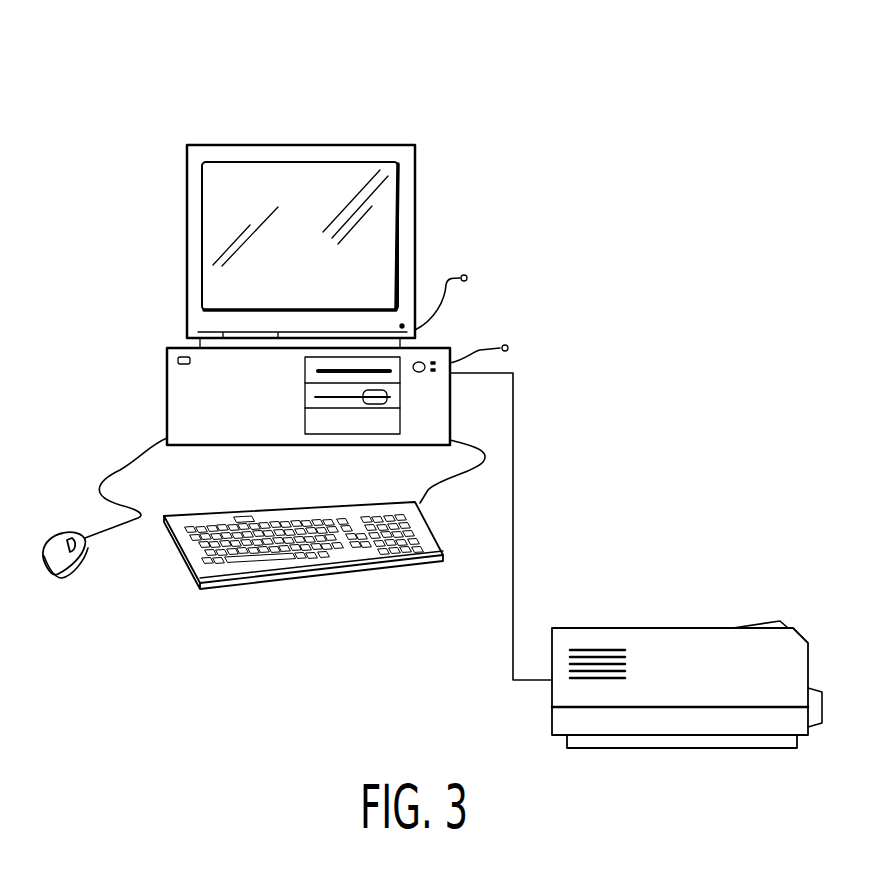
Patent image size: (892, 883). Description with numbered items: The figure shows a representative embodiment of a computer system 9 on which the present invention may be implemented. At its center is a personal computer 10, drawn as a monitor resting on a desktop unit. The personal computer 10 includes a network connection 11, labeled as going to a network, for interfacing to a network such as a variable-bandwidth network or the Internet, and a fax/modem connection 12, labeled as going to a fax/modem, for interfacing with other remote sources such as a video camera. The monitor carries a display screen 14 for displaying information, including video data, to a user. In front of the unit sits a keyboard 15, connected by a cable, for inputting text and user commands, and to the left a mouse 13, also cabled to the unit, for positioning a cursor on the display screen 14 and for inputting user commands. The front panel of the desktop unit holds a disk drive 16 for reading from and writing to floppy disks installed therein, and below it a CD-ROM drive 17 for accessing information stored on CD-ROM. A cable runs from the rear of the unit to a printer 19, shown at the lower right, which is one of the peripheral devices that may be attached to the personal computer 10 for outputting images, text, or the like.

The computer system 9 is at (492, 110).
The personal computer 10 is at (201, 113).
The network connection 11 is at (446, 288).
The fax/modem connection 12 is at (472, 356).
The mouse 13 is at (69, 576).
The display screen 14 is at (338, 176).
The keyboard 15 is at (320, 578).
The disk drive 16 is at (305, 364).
The CD-ROM drive 17 is at (305, 398).
The printer 19 is at (697, 628).